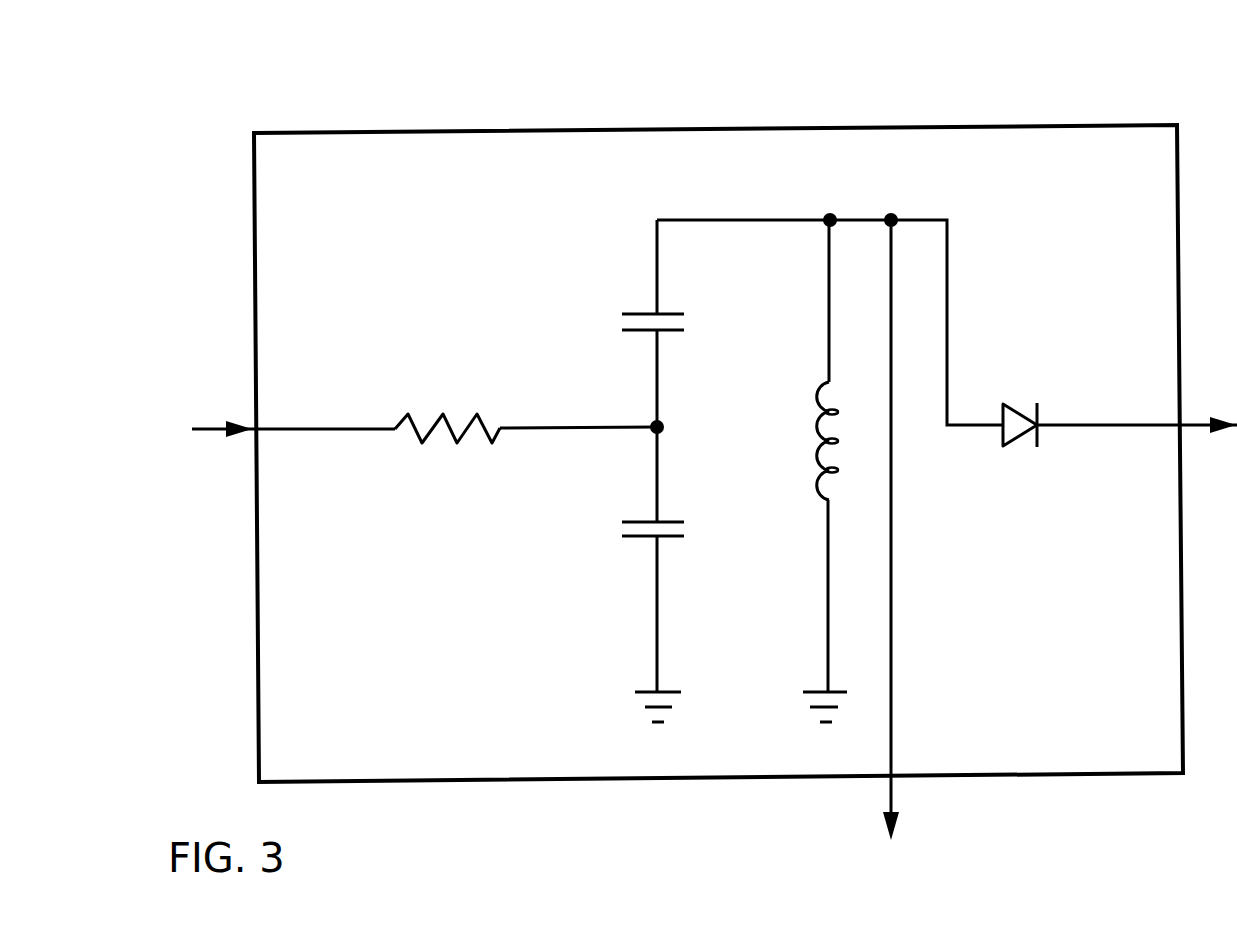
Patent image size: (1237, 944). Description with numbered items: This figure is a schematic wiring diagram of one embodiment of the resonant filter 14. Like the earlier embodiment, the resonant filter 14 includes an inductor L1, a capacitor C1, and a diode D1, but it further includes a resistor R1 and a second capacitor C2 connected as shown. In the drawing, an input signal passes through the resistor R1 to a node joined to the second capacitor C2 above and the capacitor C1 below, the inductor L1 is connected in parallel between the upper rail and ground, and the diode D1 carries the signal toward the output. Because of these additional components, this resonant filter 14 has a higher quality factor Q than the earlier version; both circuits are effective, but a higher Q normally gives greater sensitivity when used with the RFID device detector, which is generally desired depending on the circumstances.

The resonant filter 14 is at (853, 128).
The resistor R1 is at (447, 449).
The capacitor C1 is at (620, 559).
The second capacitor C2 is at (616, 323).
The inductor L1 is at (791, 456).
The diode D1 is at (1022, 445).